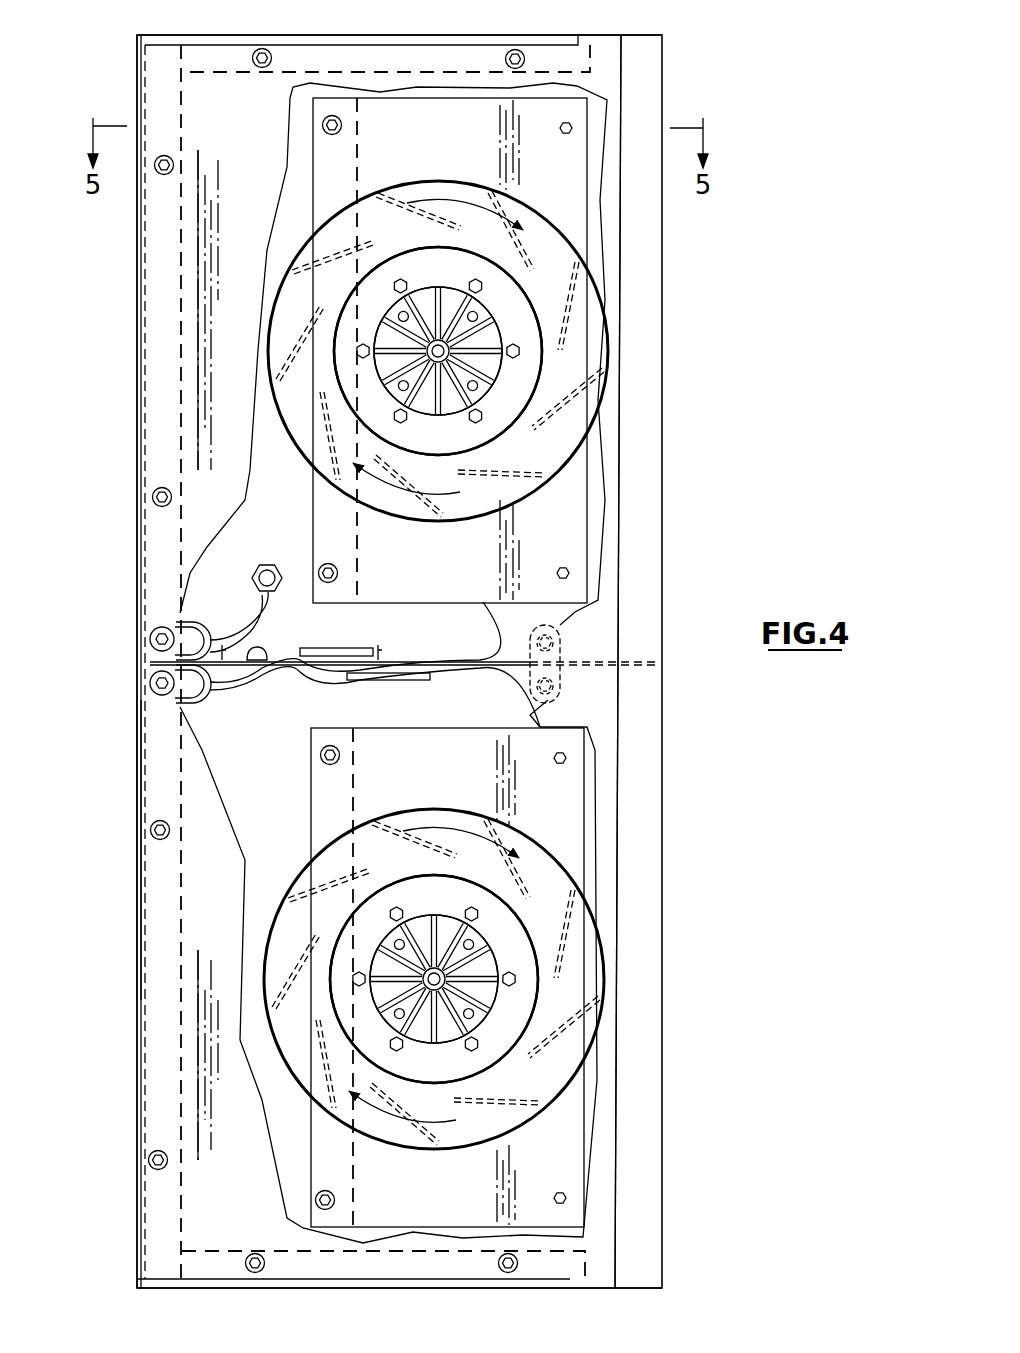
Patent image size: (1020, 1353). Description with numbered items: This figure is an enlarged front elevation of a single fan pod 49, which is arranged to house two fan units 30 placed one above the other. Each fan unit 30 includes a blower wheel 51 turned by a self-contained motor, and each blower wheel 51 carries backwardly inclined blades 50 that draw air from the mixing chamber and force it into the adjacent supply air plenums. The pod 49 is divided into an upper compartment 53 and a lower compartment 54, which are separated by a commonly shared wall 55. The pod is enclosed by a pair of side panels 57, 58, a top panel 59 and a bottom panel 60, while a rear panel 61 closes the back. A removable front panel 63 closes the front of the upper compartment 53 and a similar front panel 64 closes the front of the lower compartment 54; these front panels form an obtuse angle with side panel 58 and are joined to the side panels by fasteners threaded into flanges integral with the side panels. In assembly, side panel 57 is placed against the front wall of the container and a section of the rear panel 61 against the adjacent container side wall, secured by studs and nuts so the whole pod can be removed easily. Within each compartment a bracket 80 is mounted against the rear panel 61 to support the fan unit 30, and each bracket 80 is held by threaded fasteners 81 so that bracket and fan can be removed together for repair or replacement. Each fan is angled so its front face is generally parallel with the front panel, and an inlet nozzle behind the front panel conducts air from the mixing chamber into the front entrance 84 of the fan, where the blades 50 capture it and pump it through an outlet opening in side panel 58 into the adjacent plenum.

The fan unit 30 is at (607, 290).
The fan pod 49 is at (668, 341).
The backwardly inclined blades 50 is at (578, 396).
The blower wheel 51 is at (600, 1100).
The upper compartment 53 is at (132, 452).
The lower compartment 54 is at (122, 1140).
The commonly shared wall 55 is at (595, 662).
The side panel 57 is at (135, 857).
The side panel 58 is at (660, 822).
The top panel 59 is at (440, 34).
The bottom panel 60 is at (405, 1288).
The rear panel 61 is at (225, 734).
The front panel 63 is at (205, 213).
The front panel 64 is at (205, 915).
The bracket 80 is at (553, 95).
The threaded fasteners 81 is at (342, 122).
The front entrance 84 is at (505, 433).